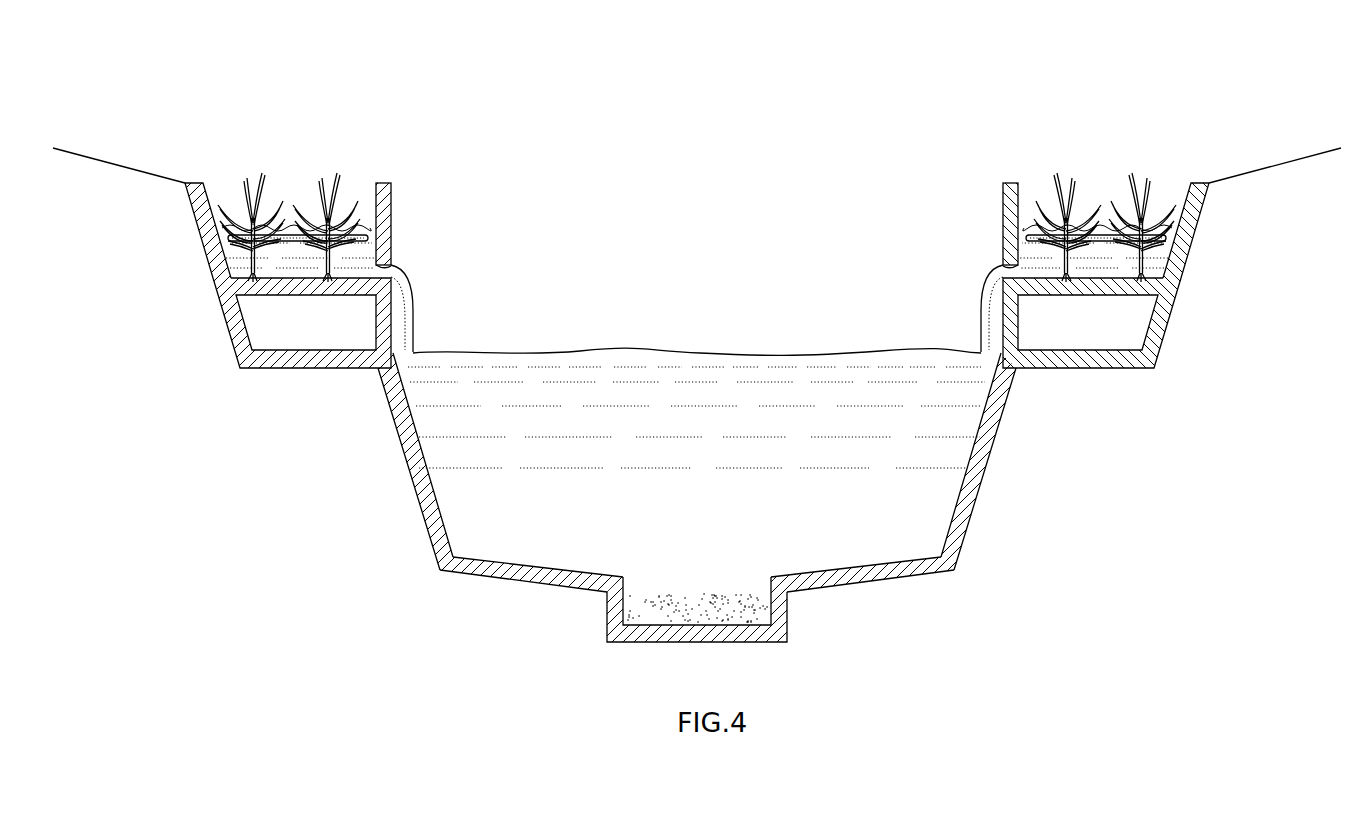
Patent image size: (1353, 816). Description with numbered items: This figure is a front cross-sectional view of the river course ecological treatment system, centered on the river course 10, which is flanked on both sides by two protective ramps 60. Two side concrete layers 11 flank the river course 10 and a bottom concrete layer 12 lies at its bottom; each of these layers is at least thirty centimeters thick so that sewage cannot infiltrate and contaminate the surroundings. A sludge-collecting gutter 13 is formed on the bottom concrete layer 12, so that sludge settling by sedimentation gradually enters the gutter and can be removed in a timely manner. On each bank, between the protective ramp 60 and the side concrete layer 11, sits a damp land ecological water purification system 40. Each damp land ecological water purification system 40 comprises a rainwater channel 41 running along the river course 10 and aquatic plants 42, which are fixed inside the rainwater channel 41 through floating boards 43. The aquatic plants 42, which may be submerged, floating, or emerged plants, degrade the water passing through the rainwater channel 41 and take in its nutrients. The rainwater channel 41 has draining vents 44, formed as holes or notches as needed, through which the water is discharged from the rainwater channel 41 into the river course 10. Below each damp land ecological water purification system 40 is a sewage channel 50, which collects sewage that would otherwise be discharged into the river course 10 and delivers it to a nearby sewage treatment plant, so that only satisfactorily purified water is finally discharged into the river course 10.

The river course 10 is at (910, 518).
The side concrete layer 11 is at (982, 453).
The bottom concrete layer 12 is at (906, 572).
The sludge-collecting gutter 13 is at (766, 617).
The damp land ecological water purification system 40 is at (334, 144).
The rainwater channel 41 is at (238, 260).
The aquatic plants 42 is at (250, 178).
The floating board 43 is at (228, 238).
The draining vent 44 is at (394, 270).
The sewage channel 50 is at (250, 327).
The protective ramp 60 is at (113, 162).